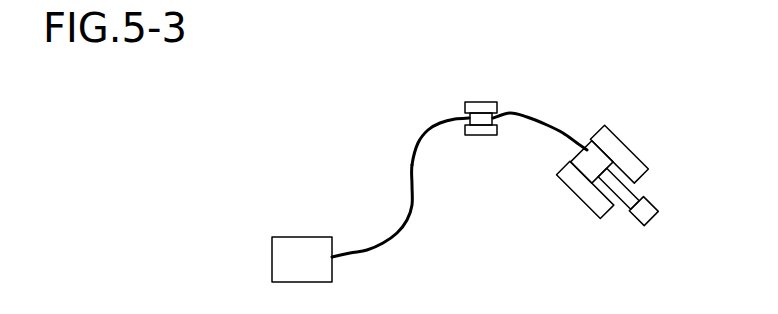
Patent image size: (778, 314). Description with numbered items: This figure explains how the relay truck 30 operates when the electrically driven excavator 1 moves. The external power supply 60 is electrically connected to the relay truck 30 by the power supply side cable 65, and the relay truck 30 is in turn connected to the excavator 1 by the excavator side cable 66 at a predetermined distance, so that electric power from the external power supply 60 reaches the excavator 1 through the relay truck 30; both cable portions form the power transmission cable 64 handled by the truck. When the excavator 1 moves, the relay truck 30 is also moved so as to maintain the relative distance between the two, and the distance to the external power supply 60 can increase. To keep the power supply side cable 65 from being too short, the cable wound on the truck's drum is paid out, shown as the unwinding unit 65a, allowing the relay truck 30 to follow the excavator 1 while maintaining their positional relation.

The excavator 1 is at (586, 211).
The relay truck 30 is at (477, 137).
The external power supply 60 is at (313, 237).
The cable 64 is at (472, 170).
The power supply side cable 65 is at (408, 224).
The unwinding unit 65a is at (436, 123).
The excavator side cable 66 is at (556, 124).